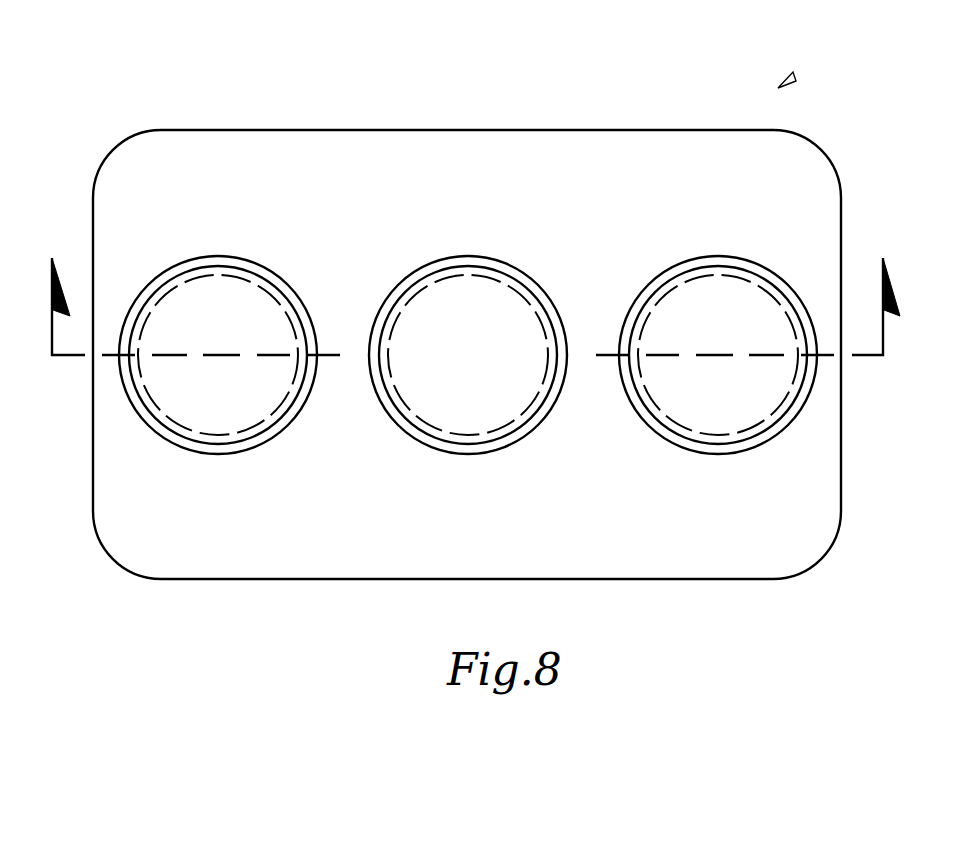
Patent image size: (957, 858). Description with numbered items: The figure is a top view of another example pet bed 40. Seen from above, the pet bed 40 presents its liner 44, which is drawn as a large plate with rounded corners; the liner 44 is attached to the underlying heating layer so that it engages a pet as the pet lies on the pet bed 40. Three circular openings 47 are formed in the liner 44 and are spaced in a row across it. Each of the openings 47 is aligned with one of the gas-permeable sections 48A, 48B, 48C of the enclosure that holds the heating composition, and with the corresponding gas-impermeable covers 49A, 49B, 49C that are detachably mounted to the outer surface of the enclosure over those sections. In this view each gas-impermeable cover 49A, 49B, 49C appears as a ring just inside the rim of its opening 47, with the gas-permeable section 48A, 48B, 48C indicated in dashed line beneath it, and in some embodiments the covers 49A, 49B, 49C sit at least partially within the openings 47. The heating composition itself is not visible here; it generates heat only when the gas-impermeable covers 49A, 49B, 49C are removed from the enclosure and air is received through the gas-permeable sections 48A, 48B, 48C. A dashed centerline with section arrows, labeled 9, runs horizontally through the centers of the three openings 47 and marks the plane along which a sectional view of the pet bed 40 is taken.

The pet bed 40 is at (795, 79).
The liner 44 is at (490, 152).
The openings 47 is at (257, 263).
The gas-permeable section 48A is at (232, 435).
The gas-permeable section 48B is at (482, 435).
The gas-permeable section 48C is at (732, 435).
The gas-impermeable cover 49A is at (218, 267).
The gas-impermeable cover 49B is at (468, 267).
The gas-impermeable cover 49C is at (718, 267).
The section line 9- 9 is at (475, 280).